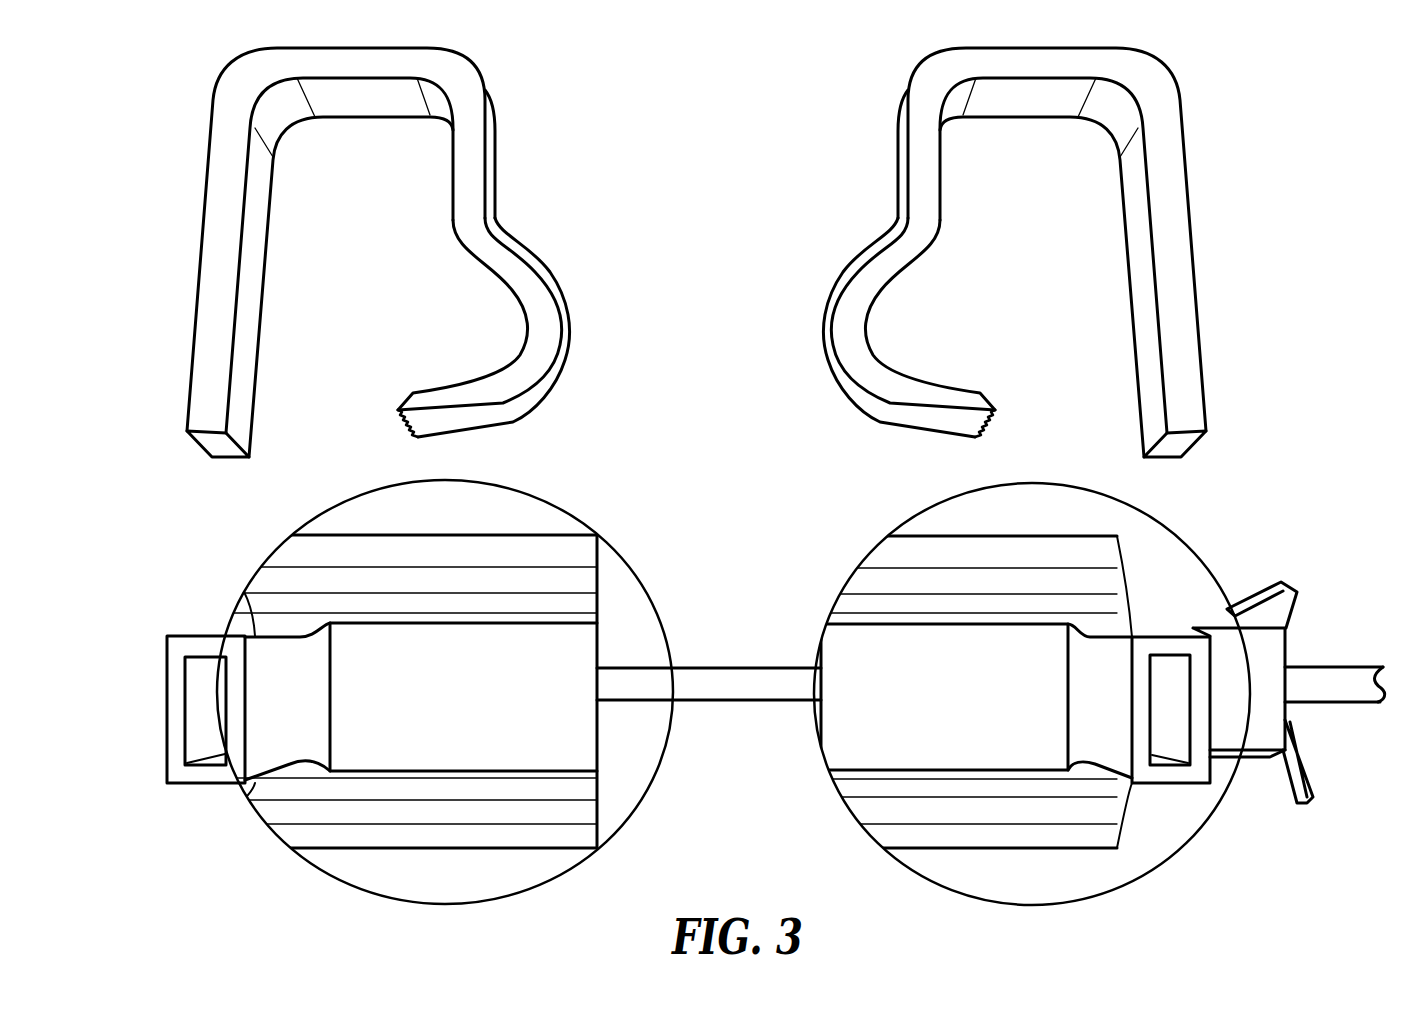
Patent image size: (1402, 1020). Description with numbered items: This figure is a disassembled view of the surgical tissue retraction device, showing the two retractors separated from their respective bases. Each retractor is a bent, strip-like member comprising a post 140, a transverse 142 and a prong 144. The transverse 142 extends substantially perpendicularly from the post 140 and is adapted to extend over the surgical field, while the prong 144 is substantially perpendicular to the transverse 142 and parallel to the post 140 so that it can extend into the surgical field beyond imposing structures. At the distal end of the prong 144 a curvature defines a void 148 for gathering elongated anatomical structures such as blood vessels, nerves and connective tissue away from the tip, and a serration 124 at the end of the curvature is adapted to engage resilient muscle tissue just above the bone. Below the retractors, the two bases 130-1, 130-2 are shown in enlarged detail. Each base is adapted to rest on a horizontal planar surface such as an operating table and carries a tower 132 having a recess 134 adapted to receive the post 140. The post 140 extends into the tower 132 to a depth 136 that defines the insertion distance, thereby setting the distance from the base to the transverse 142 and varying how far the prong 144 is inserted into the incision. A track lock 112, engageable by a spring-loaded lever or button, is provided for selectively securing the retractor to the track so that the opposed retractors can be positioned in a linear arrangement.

The track lock 112 is at (1297, 592).
The serration 124 is at (462, 422).
The base 130-1 is at (340, 882).
The base 130-2 is at (1125, 887).
The tower 132 is at (194, 773).
The recess 134 is at (210, 708).
The depth 136 is at (222, 630).
The post 140 is at (214, 241).
The transverse 142 is at (486, 86).
The prong 144 is at (480, 186).
The void 148 is at (488, 334).